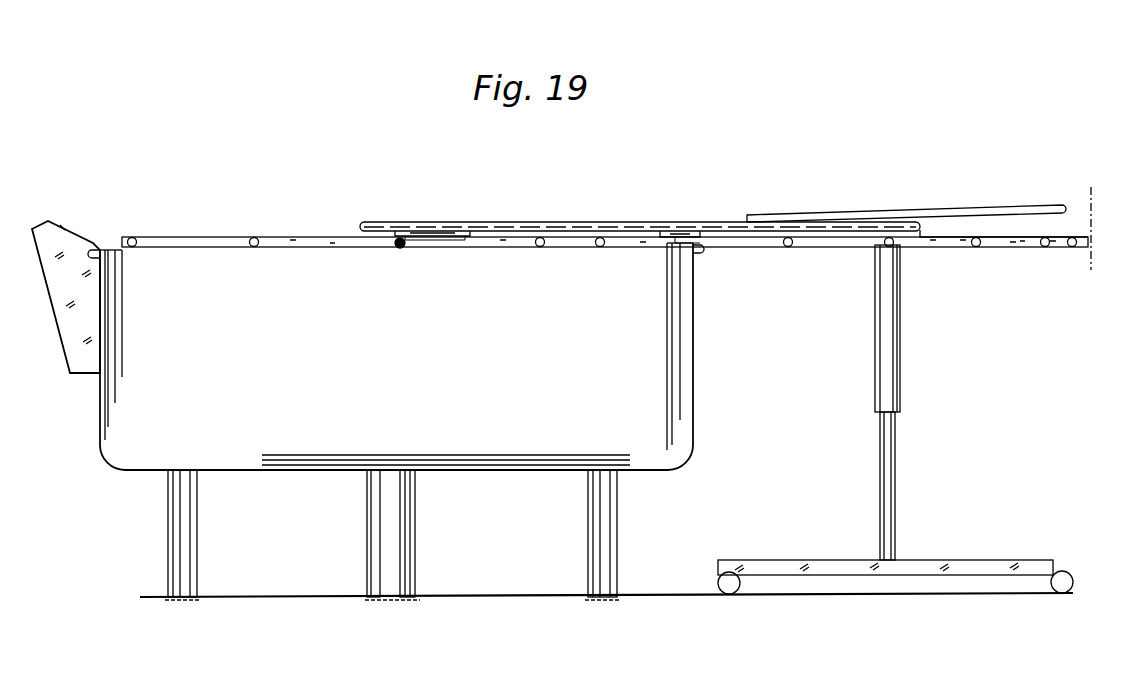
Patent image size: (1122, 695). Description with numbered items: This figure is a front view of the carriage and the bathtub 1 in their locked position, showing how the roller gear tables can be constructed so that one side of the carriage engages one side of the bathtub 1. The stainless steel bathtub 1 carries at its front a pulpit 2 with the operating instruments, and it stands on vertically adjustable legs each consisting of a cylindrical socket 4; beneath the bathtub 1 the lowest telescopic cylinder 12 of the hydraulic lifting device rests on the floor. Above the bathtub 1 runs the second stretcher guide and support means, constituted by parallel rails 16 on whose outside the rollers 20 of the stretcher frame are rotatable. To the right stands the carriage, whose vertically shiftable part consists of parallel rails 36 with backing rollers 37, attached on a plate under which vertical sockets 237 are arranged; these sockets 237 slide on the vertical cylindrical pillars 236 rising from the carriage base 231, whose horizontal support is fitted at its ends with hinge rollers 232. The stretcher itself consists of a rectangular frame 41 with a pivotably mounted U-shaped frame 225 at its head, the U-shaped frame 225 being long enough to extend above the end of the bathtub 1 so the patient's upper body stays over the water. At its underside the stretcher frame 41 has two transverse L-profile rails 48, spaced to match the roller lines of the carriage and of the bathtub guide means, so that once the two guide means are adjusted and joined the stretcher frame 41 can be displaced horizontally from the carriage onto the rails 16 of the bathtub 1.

The bathtub 1 is at (668, 325).
The pulpit 2 is at (70, 217).
The cylindrical socket 4 is at (186, 532).
The telescopic cylinder 12 is at (392, 530).
The parallel rails 16 is at (210, 230).
The rollers 20 is at (134, 239).
The parallel rails 36 is at (712, 240).
The backing rollers 37 is at (990, 216).
The rectangular frame 41 is at (387, 223).
The transverse parallel rails 48 is at (442, 234).
The U-shaped frame 225 is at (822, 216).
The base plate 231 is at (935, 560).
The hinge rollers 232 is at (766, 545).
The vertical cylindrical pillar 236 is at (897, 434).
The vertical sockets 237 is at (886, 321).